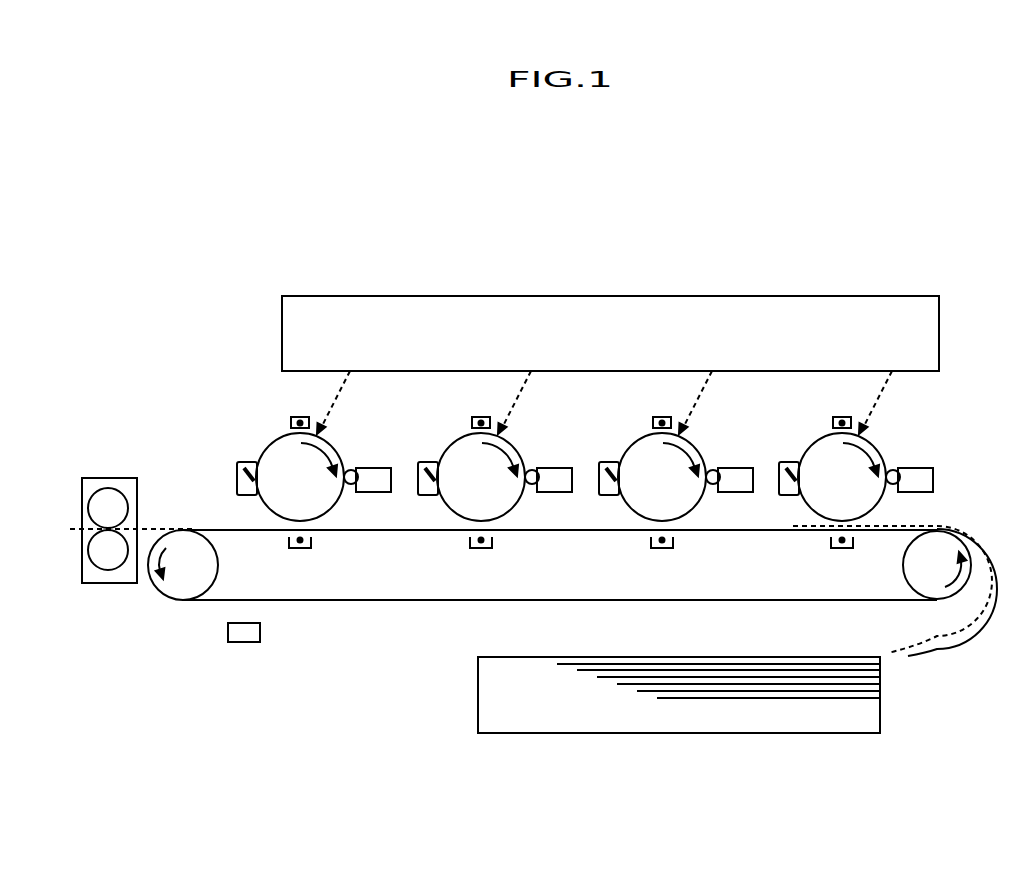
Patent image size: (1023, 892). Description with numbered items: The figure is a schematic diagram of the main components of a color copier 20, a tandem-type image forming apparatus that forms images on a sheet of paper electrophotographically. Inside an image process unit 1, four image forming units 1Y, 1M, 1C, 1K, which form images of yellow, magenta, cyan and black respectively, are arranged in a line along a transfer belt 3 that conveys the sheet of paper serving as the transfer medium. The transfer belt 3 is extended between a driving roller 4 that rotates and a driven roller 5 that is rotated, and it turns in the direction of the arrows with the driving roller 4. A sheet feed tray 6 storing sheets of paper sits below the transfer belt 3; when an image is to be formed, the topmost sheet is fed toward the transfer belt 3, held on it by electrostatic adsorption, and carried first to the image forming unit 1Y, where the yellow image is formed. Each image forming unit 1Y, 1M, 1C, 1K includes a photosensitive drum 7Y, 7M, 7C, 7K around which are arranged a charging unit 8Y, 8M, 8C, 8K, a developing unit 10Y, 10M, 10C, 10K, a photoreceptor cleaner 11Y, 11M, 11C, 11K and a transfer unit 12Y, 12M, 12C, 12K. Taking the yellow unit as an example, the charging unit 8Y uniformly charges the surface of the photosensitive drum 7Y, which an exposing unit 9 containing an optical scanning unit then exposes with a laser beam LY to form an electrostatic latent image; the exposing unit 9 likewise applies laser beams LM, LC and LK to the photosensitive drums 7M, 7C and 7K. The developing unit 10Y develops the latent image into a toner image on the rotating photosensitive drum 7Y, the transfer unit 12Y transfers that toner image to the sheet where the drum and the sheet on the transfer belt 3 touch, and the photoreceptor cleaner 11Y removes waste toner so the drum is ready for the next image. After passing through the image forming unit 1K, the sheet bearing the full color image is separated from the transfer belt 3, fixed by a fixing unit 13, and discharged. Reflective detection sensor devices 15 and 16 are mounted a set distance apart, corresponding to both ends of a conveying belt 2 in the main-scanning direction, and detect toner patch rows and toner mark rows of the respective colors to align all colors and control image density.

The color copier 20 is at (932, 186).
The image process unit 1 is at (991, 352).
The image forming unit 1K is at (222, 396).
The image forming unit 1C is at (403, 396).
The image forming unit 1M is at (584, 396).
The image forming unit 1Y is at (764, 396).
The conveying belt 2 is at (774, 680).
The transfer belt 3 is at (393, 603).
The driving roller 4 is at (943, 588).
The driven roller 5 is at (183, 586).
The sheet feed tray 6 is at (565, 734).
The photosensitive drum 7K is at (333, 441).
The photosensitive drum 7C is at (514, 441).
The photosensitive drum 7M is at (695, 441).
The photosensitive drum 7Y is at (875, 441).
The charging unit 8K is at (298, 416).
The charging unit 8C is at (479, 416).
The charging unit 8M is at (660, 416).
The charging unit 8Y is at (840, 416).
The exposing unit 9 is at (609, 296).
The developing unit 10K is at (367, 492).
The developing unit 10C is at (548, 492).
The developing unit 10M is at (729, 492).
The developing unit 10Y is at (909, 492).
The photoreceptor cleaner 11K is at (251, 462).
The photoreceptor cleaner 11C is at (432, 462).
The photoreceptor cleaner 11M is at (613, 462).
The photoreceptor cleaner 11Y is at (793, 462).
The transfer unit 12K is at (300, 548).
The transfer unit 12C is at (481, 548).
The transfer unit 12M is at (662, 548).
The transfer unit 12Y is at (842, 548).
The fixing unit 13 is at (113, 478).
The detection sensor device 15 is at (260, 682).
The detection sensor device 16 is at (245, 643).
The laser beam LK is at (330, 388).
The laser beam LC is at (511, 388).
The laser beam LM is at (692, 388).
The laser beam LY is at (872, 388).